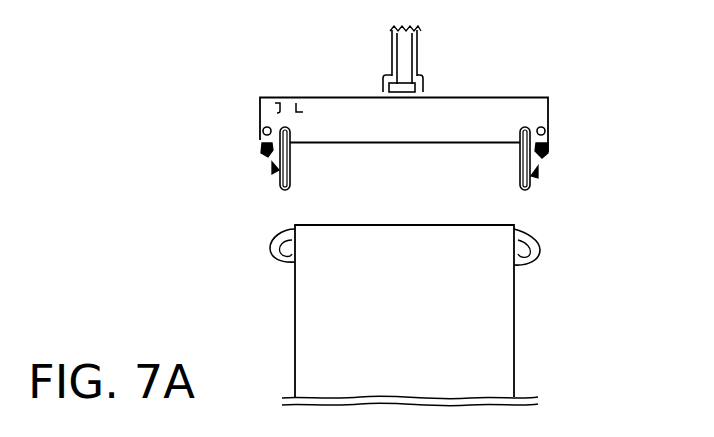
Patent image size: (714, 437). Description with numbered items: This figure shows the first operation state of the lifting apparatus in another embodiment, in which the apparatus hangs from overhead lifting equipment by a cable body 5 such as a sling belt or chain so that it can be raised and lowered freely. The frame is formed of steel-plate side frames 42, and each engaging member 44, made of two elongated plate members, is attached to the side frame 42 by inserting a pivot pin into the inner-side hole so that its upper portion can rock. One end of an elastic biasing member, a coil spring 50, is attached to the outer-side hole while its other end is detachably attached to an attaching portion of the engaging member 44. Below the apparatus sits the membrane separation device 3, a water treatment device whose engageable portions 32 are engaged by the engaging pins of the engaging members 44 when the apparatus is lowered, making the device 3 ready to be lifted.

The cable body 5 is at (385, 68).
The side frame 42 is at (470, 112).
The engaging member 44 is at (529, 135).
The coil spring 50 is at (549, 151).
The engageable portion 32 is at (539, 238).
The membrane separation device 3 is at (512, 378).